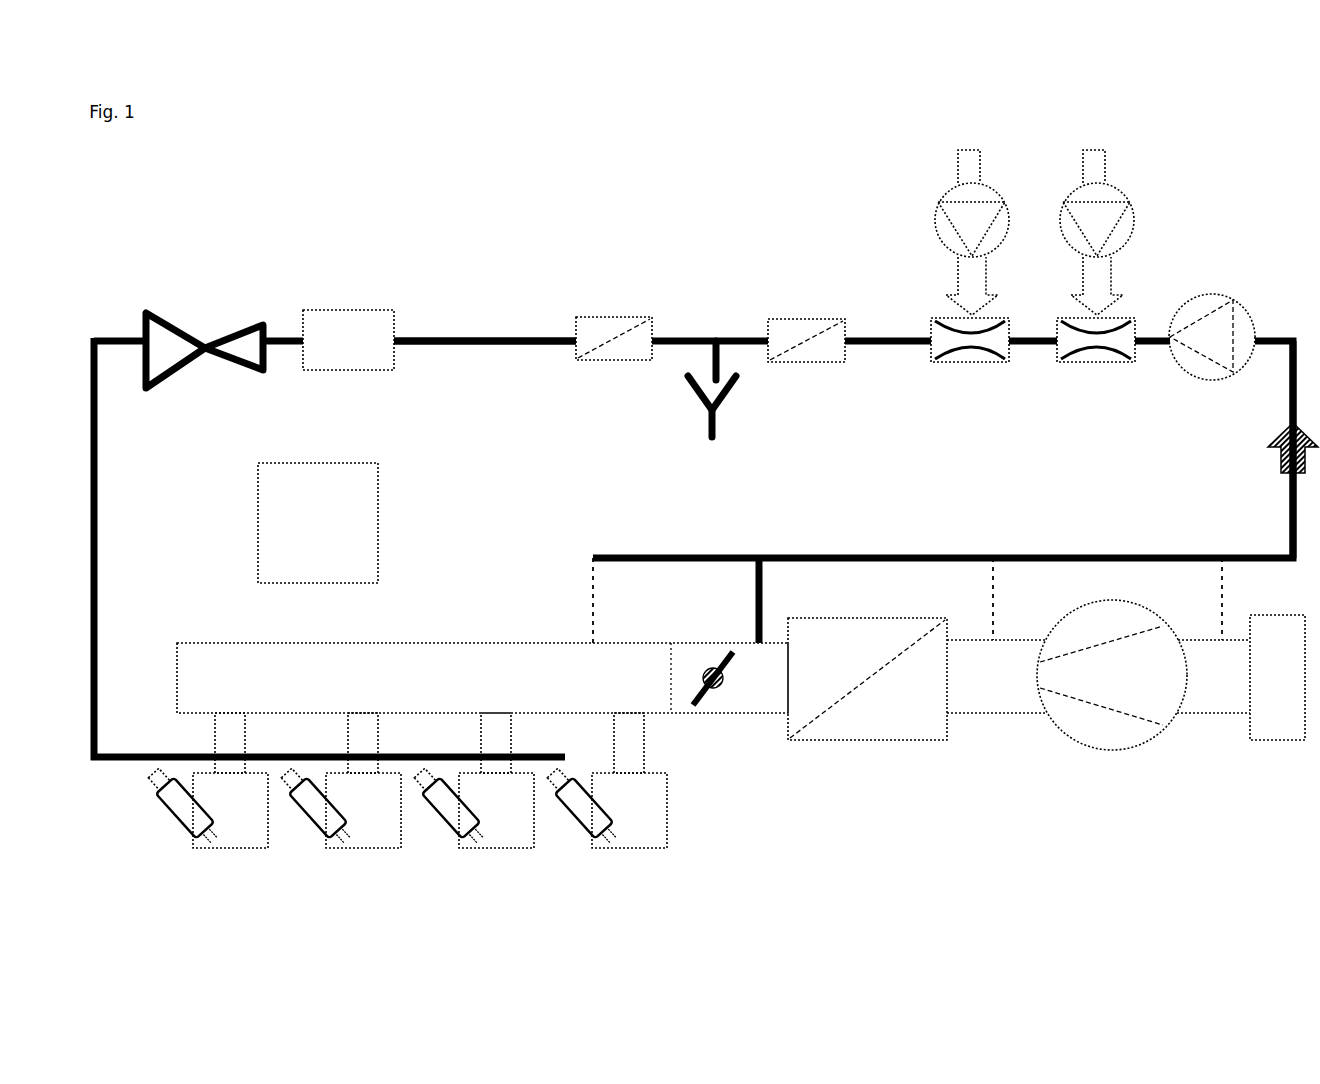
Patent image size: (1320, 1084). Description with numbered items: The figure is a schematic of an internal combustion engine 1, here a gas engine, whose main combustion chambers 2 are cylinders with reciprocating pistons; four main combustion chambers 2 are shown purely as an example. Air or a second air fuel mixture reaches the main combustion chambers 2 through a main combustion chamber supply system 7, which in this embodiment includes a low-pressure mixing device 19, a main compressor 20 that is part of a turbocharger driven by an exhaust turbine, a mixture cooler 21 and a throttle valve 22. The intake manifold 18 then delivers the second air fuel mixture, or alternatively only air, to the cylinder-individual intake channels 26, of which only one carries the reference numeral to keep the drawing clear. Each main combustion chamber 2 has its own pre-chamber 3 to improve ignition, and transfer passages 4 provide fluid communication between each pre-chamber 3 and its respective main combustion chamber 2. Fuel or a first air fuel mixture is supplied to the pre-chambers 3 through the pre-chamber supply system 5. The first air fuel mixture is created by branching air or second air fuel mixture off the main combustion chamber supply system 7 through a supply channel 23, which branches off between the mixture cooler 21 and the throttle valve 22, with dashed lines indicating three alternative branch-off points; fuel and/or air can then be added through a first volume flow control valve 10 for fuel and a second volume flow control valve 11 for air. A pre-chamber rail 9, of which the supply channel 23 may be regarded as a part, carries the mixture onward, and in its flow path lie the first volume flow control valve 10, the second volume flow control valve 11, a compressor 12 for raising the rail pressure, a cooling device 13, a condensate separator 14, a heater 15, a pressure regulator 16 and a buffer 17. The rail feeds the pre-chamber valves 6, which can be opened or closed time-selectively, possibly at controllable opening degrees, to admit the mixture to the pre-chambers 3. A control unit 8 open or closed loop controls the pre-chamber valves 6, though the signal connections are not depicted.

The internal combustion engine 1 is at (1245, 190).
The main combustion chamber 2 is at (230, 816).
The pre-chamber 3 is at (170, 818).
The transfer passage 4 is at (205, 834).
The pre-chamber supply system 5 is at (525, 210).
The pre-chamber valve 6 is at (152, 777).
The main combustion chamber supply system 7 is at (1260, 800).
The control unit 8 is at (312, 535).
The pre-chamber rail 9 is at (490, 335).
The first volume flow control valve 10 is at (1130, 300).
The second volume flow control valve 11 is at (935, 305).
The compressor 12 is at (1235, 283).
The cooling device 13 is at (815, 310).
The condensate separator 14 is at (672, 398).
The heater 15 is at (607, 305).
The pressure regulator 16 is at (192, 297).
The buffer 17 is at (341, 301).
The intake manifold 18 is at (447, 685).
The low-pressure mixing device 19 is at (1289, 684).
The main compressor 20 is at (1078, 770).
The mixture cooler 21 is at (877, 753).
The throttle valve 22 is at (718, 715).
The supply channel 23 is at (1290, 413).
The intake channel 26 is at (640, 738).